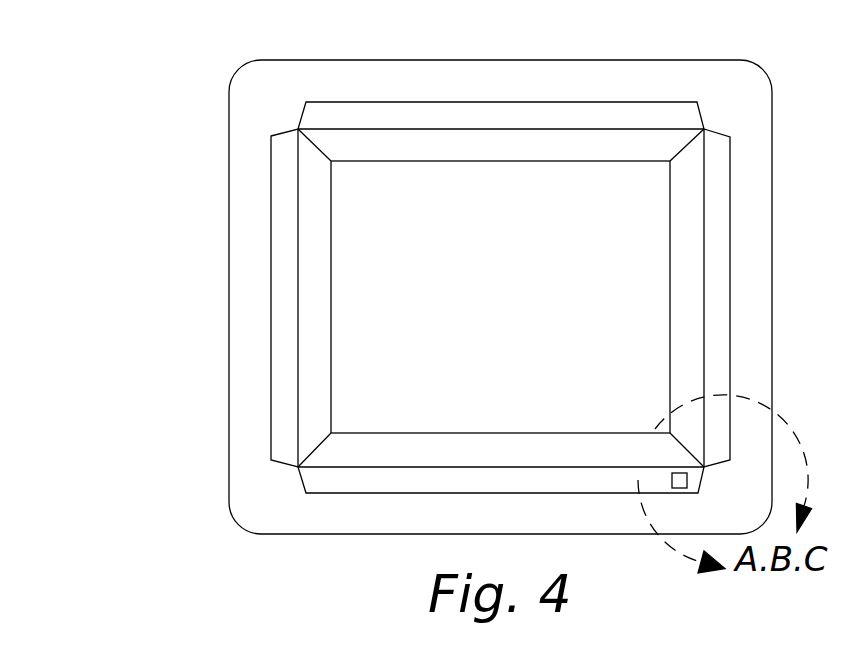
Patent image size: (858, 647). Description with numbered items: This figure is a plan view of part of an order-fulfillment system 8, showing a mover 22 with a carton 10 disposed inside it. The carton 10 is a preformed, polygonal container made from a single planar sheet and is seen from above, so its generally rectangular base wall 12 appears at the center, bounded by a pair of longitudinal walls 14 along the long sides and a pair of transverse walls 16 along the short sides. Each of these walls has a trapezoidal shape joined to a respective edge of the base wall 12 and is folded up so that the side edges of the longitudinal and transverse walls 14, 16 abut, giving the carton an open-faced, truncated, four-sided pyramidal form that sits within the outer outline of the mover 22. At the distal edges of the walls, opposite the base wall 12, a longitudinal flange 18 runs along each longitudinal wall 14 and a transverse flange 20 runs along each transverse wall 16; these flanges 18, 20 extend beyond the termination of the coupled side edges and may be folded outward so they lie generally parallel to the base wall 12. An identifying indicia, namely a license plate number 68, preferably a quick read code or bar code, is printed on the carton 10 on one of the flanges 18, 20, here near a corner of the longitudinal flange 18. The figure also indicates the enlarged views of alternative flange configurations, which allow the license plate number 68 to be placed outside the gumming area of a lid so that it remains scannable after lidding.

The order-fulfillment system 8 is at (301, 596).
The carton 10 is at (283, 315).
The base wall 12 is at (518, 300).
The longitudinal walls 14 is at (450, 443).
The transverse walls 16 is at (316, 247).
The longitudinal flange 18 is at (400, 493).
The transverse flange 20 is at (722, 131).
The mover 22 is at (275, 533).
The license plate number 68 is at (676, 488).